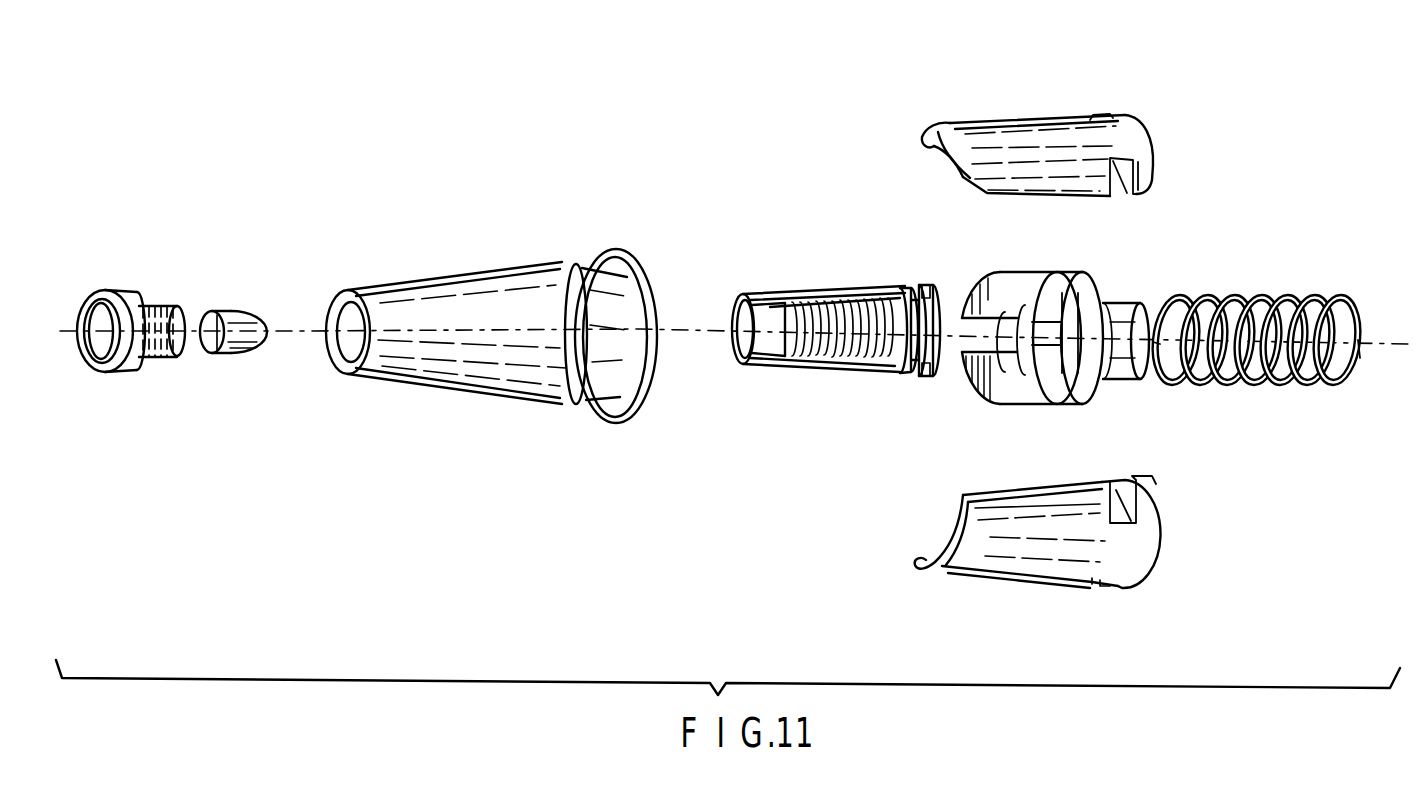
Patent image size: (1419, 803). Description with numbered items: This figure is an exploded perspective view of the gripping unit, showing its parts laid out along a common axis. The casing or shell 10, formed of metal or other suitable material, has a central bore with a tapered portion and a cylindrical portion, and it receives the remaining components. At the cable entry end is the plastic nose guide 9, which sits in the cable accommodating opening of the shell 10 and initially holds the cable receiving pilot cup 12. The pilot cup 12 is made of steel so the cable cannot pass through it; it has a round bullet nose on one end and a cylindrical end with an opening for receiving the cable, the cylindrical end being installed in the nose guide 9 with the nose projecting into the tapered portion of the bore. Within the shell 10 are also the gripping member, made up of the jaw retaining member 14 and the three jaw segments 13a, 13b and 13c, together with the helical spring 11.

The nose guide 9 is at (110, 370).
The shell 10 is at (460, 390).
The helical spring 11 is at (1273, 296).
The cable receiving pilot cup 12 is at (227, 355).
The jaw segment 13a is at (992, 122).
The jaw segment 13b is at (1014, 578).
The jaw segment 13c is at (800, 368).
The jaw retaining member 14 is at (1120, 300).